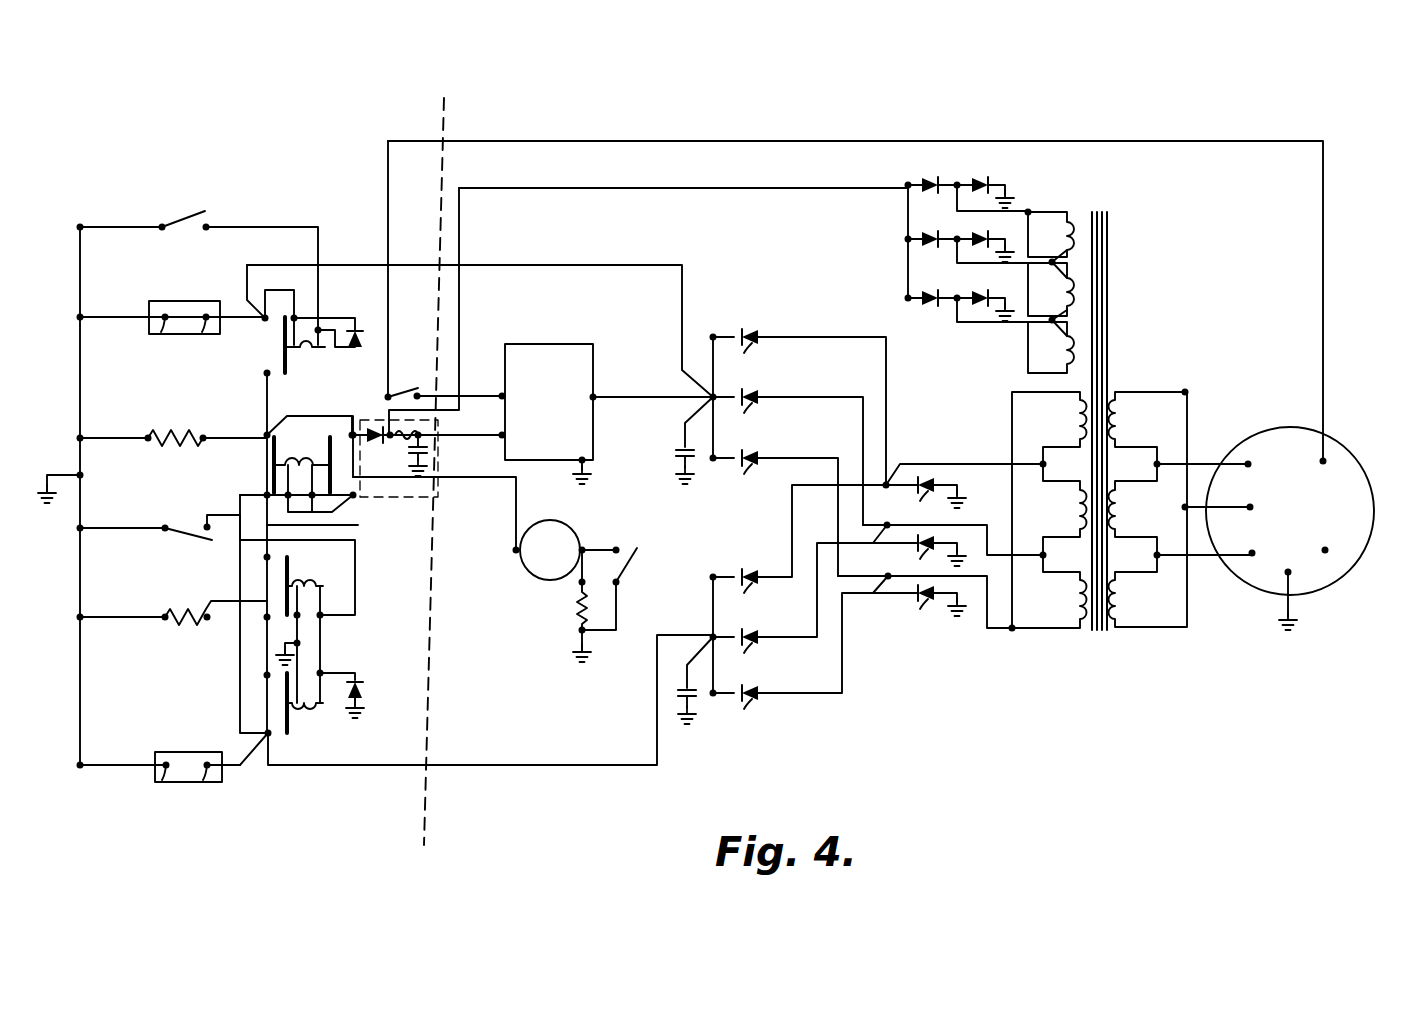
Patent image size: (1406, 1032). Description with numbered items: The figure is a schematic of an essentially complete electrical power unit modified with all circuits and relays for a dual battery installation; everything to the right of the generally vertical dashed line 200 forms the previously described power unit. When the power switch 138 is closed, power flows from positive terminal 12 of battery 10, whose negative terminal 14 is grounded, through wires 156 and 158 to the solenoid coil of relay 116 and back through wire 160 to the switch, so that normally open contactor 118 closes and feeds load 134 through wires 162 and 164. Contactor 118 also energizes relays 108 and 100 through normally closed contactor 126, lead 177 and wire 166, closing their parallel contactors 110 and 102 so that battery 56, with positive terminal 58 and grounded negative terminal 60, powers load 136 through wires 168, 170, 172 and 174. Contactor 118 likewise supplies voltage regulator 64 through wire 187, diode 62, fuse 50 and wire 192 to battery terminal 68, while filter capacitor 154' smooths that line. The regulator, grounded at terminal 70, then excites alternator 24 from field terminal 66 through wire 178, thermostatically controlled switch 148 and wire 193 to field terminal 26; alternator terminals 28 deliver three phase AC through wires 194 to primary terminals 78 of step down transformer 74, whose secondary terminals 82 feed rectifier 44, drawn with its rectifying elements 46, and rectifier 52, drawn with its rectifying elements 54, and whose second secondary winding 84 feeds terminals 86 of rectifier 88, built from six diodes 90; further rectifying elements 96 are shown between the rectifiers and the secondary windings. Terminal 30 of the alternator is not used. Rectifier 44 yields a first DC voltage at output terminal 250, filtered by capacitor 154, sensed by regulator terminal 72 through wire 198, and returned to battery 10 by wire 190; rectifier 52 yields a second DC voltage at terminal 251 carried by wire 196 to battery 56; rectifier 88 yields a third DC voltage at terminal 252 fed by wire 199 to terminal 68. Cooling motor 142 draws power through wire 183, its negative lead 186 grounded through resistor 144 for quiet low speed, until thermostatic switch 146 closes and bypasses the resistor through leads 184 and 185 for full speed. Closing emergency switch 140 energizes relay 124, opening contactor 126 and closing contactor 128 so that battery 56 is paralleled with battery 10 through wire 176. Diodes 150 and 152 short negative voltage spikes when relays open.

The battery 10 is at (184, 301).
The positive terminal of battery 12 is at (209, 336).
The negative terminal of battery 14 is at (157, 336).
The alternator 24 is at (1290, 528).
The field terminal of alternator 26 is at (1324, 464).
The alternator output terminals 28 is at (1250, 466).
The alternator DC terminal 30 is at (1322, 548).
The rectifier 44 is at (814, 322).
The SCR 46 is at (762, 358).
The fuse 50 is at (418, 435).
The rectifier 52 is at (781, 718).
The SCR 54 is at (749, 594).
The battery 56 is at (188, 752).
The positive terminal of battery 58 is at (206, 786).
The negative terminal of battery 60 is at (161, 786).
The diode 62 is at (372, 444).
The voltage regulator 64 is at (560, 344).
The field terminal of regulator 66 is at (505, 398).
The battery terminal of regulator 68 is at (505, 437).
The ground terminal of regulator 70 is at (582, 458).
The sensing terminal of regulator 72 is at (592, 398).
The three phase AC step down transformer 74 is at (1114, 658).
The input terminal of transformer 78 is at (1152, 465).
The secondary terminals of transformer 82 is at (1046, 465).
The second secondary winding 84 is at (1056, 269).
The secondary terminals 86 is at (1042, 216).
The rectifier 88 is at (948, 411).
The diodes 90 is at (978, 180).
The SCR 96 is at (921, 493).
The relay 100 is at (318, 712).
The contactor 102 is at (287, 730).
The relay 108 is at (308, 580).
The contactor 110 is at (286, 553).
The relay 116 is at (316, 348).
The contactor 118 is at (290, 378).
The relay 124 is at (302, 471).
The contactor 126 is at (289, 456).
The contactor 128 is at (341, 456).
The load 134 is at (180, 416).
The load 136 is at (191, 625).
The power switch 138 is at (181, 214).
The emergency switch 140 is at (186, 535).
The cooling motor 142 is at (522, 570).
The resistor 144 is at (574, 624).
The thermostatically controlled switch 146 is at (636, 570).
The thermostatically controlled switch 148 is at (406, 386).
The diode 150 is at (357, 328).
The diode 152 is at (365, 686).
The filter capacitor 154 is at (675, 560).
The filter capacitor 154' is at (439, 455).
The wire 156 is at (226, 314).
The wire 158 is at (281, 298).
The wire 160 is at (285, 214).
The wire 162 is at (265, 406).
The wire 164 is at (230, 450).
The wire 166 is at (357, 595).
The wire 168 is at (250, 770).
The wire 170 is at (266, 658).
The wire 172 is at (238, 690).
The wire 174 is at (212, 608).
The wire 176 is at (358, 525).
The lead 177 is at (222, 510).
The wire 178 is at (487, 392).
The wire 183 is at (472, 478).
The lead 184 is at (602, 546).
The lead 185 is at (624, 612).
The negative lead of motor 186 is at (578, 578).
The wire 187 is at (340, 398).
The wire 190 is at (522, 264).
The wire 192 is at (436, 440).
The wire 193 is at (797, 141).
The wires 194 is at (1182, 504).
The wire 196 is at (511, 766).
The wire 198 is at (666, 390).
The wire 199 is at (632, 190).
The dashed line 200 is at (446, 108).
The first rectifier output terminal 250 is at (706, 400).
The second rectifier output terminal 251 is at (710, 636).
The third rectifier output terminal 252 is at (904, 188).